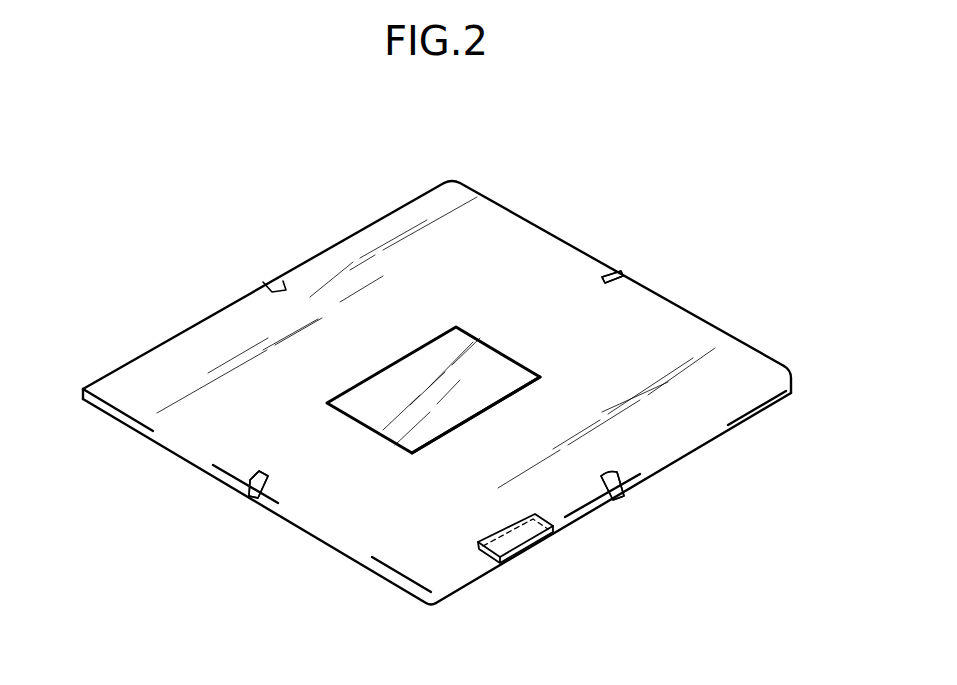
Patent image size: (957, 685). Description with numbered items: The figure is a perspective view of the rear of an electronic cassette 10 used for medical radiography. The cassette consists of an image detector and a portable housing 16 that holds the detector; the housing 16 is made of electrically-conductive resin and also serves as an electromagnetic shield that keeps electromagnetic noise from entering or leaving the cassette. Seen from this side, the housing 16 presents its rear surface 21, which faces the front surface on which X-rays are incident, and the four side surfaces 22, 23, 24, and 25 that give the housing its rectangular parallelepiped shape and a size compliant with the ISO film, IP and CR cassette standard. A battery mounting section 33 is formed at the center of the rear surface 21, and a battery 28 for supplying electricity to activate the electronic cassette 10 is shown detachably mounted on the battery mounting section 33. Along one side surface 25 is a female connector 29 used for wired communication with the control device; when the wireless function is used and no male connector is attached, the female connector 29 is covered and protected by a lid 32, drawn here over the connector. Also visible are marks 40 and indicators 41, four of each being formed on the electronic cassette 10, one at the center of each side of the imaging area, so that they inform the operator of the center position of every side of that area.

The electronic cassette 10 is at (458, 345).
The housing 16 is at (643, 262).
The rear surface 21 is at (791, 380).
The side surface 22 is at (518, 208).
The side surface 23 is at (288, 518).
The side surface 24 is at (143, 354).
The side surface 25 is at (580, 519).
The battery 28 is at (520, 381).
The female connector 29 is at (478, 506).
The lid 32 is at (528, 542).
The battery mounting section 33 is at (357, 381).
The mark 40 is at (254, 493).
The indicator 41 is at (272, 266).